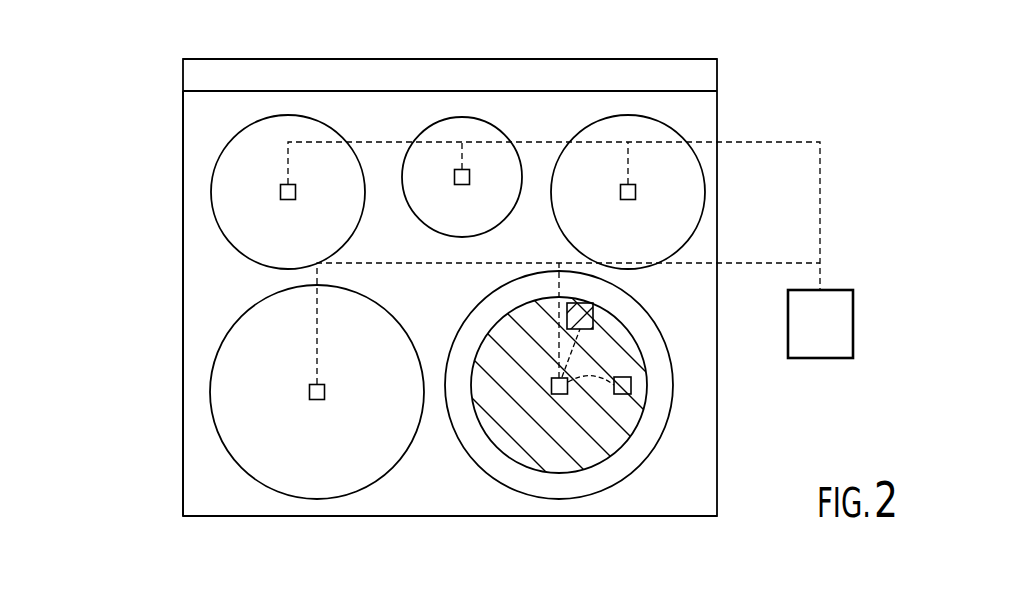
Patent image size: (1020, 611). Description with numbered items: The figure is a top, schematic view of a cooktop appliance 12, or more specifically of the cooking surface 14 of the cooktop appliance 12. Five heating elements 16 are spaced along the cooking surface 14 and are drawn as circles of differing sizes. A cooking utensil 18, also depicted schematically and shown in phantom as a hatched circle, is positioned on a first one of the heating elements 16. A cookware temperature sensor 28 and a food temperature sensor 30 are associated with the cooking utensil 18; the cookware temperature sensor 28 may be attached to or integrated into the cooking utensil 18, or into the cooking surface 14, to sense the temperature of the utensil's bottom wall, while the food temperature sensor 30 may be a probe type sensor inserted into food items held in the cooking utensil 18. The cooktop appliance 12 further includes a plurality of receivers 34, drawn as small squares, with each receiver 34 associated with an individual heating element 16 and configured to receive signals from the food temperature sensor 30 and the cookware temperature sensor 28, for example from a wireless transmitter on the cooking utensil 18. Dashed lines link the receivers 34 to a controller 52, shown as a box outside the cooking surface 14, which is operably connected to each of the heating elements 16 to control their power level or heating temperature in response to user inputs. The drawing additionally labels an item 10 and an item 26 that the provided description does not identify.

The cooktop appliance 10 is at (104, 180).
The cooktop appliance 12 is at (104, 363).
The cooking surface 14 is at (208, 289).
The heating elements 16 is at (470, 457).
The cooking utensil 18 is at (630, 440).
The control panel 26 is at (220, 72).
The cookware temperature sensor 28 is at (632, 386).
The food temperature sensor 30 is at (593, 313).
The receivers 34 is at (470, 178).
The controller 52 is at (853, 322).